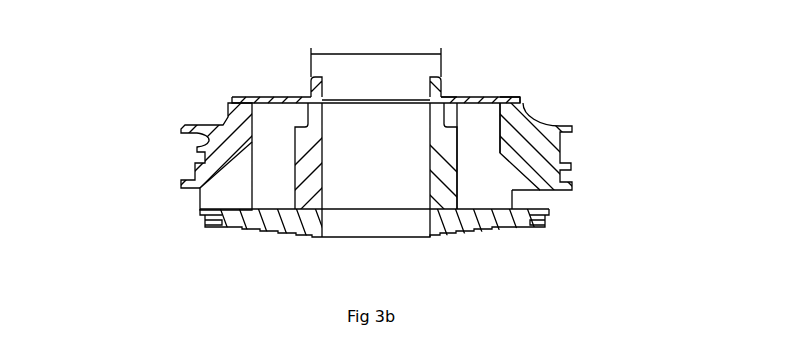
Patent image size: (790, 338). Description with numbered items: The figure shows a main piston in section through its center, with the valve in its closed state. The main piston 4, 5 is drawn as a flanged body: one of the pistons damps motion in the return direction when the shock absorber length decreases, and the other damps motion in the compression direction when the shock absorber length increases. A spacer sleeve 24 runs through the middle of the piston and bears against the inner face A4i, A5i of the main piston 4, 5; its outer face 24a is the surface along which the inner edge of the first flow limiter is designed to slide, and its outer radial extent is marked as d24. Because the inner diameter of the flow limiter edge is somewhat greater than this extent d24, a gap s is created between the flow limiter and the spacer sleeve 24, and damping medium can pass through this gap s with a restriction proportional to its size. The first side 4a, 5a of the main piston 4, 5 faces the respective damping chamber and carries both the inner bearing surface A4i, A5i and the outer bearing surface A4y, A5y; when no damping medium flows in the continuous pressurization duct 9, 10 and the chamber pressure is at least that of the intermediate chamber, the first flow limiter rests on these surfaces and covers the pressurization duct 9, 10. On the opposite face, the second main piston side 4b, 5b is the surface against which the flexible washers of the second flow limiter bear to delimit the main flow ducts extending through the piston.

The housing parts 4, 5 is at (150, 130).
The upper side of housing parts 4a, 5a is at (230, 97).
The gap s is at (305, 97).
The spacer sleeve 24 is at (312, 92).
The outer face of the spacer sleeve 24a is at (308, 95).
The spacer sleeve outer radial extent d24 is at (376, 54).
The inner contact surface A4i, A5i is at (445, 97).
The outer contact surface A4y, A5y is at (520, 97).
The annular gap 9, 10 is at (483, 170).
The lower side of housing parts 4b, 5b is at (200, 213).